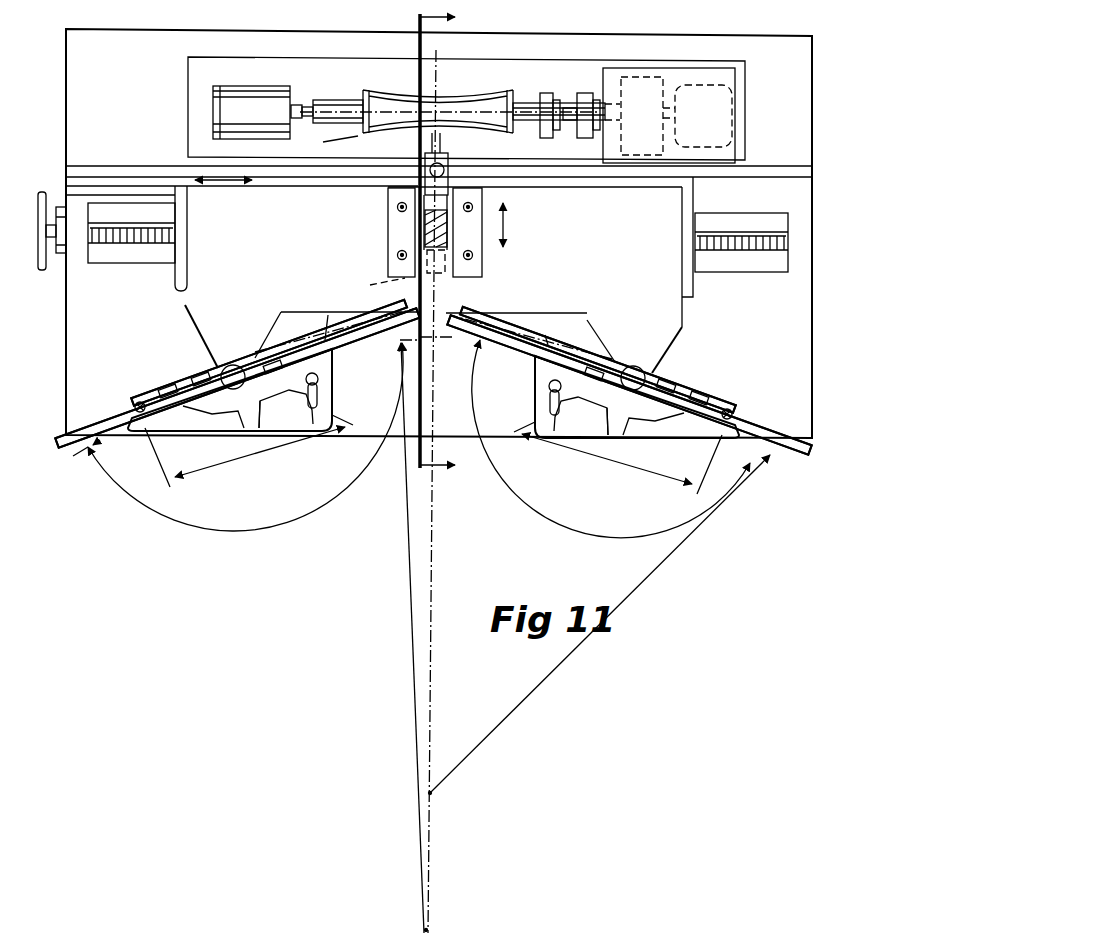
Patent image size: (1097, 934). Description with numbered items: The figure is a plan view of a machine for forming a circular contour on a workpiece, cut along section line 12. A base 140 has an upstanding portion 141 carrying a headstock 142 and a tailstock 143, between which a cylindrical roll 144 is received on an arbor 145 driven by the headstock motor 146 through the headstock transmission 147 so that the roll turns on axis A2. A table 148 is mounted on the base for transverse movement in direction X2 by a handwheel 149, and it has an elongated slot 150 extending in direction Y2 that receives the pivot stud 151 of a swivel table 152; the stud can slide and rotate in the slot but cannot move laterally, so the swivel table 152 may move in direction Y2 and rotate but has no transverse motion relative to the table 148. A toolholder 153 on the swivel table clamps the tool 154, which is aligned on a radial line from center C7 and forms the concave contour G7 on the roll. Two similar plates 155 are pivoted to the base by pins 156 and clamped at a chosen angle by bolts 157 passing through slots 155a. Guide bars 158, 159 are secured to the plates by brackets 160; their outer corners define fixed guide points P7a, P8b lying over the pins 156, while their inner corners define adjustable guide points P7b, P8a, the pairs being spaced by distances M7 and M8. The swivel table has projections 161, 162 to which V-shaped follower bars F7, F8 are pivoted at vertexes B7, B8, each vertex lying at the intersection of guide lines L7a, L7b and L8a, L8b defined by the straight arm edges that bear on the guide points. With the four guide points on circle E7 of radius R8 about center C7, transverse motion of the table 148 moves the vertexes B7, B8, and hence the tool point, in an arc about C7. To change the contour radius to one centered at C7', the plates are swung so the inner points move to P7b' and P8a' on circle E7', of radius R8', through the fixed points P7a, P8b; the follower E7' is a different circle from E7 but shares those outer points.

The section line 12 is at (417, 241).
The base 140 is at (106, 373).
The upstanding portion 141 is at (188, 74).
The headstock 142 is at (688, 68).
The tailstock 143 is at (245, 86).
The cylindrical roll 144 is at (372, 97).
The arbor 145 is at (330, 100).
The headstock motor 146 is at (733, 90).
The headstock transmission 147 is at (628, 77).
The table 148 is at (176, 292).
The handwheel 149 is at (45, 192).
The elongated slot 150 is at (445, 275).
The pivot stud 151 is at (376, 287).
The swivel table 152 is at (601, 263).
The toolholder 153 is at (388, 245).
The tool 154 is at (448, 148).
The plate 155 is at (330, 387).
The slot 155a is at (433, 418).
The pin 156 is at (136, 404).
The bolt 157 is at (318, 402).
The guide bar 158 is at (318, 374).
The guide bar 159 is at (548, 382).
The bracket 160 is at (288, 390).
The projection 161 is at (197, 343).
The projection 162 is at (670, 348).
The axis of rotation A2 is at (490, 112).
The circular contour G7 is at (358, 136).
The transverse direction X2 is at (210, 183).
The slot direction Y2 is at (505, 224).
The vertex B7 is at (242, 364).
The vertex B8 is at (640, 364).
The V-shaped follower bar F7 is at (168, 390).
The V-shaped follower bar F8 is at (674, 390).
The guide line L7a is at (60, 452).
The guide line L7b is at (342, 348).
The guide line L8a is at (508, 352).
The guide line L8b is at (790, 462).
The outer guide point P7a is at (125, 412).
The inner guide point P7b is at (269, 344).
The adjusted inner guide point P7b' is at (322, 303).
The inner guide point P8a is at (598, 345).
The adjusted inner guide point P8a' is at (563, 319).
The outer guide point P8b is at (725, 410).
The guide point spacing M7 is at (249, 451).
The guide point spacing M8 is at (618, 458).
The circle E7 is at (83, 467).
The circle E7' is at (114, 448).
The radius R8 is at (395, 638).
The radius R8' is at (600, 624).
The center C7 is at (449, 926).
The center C7' is at (450, 793).